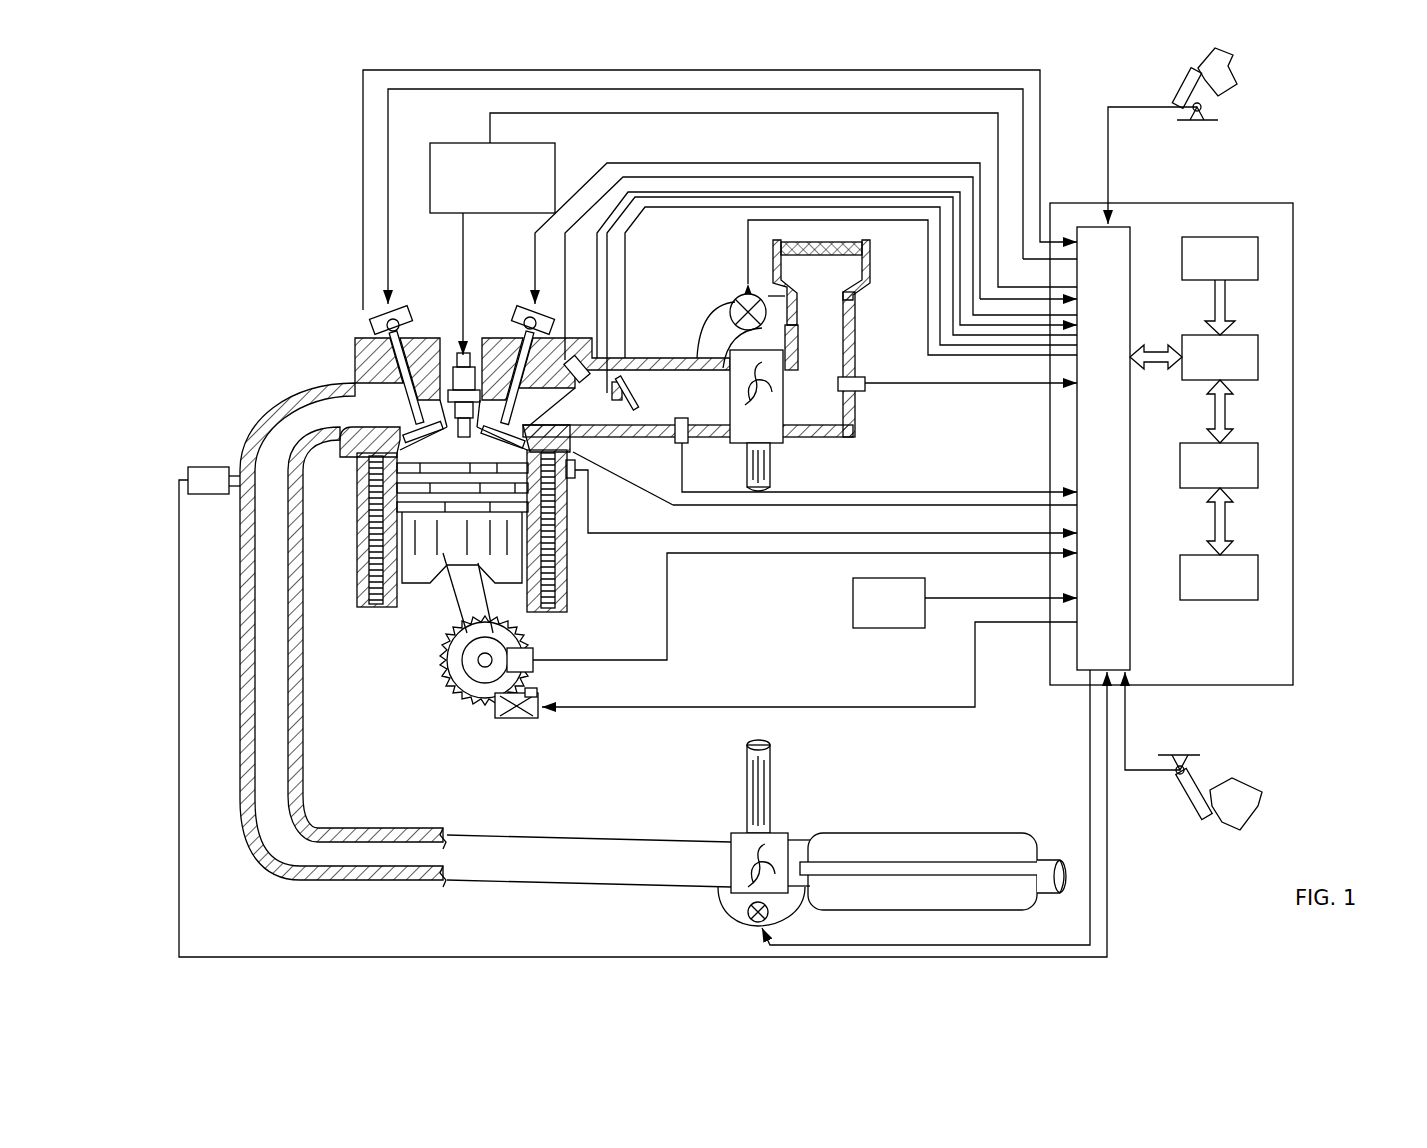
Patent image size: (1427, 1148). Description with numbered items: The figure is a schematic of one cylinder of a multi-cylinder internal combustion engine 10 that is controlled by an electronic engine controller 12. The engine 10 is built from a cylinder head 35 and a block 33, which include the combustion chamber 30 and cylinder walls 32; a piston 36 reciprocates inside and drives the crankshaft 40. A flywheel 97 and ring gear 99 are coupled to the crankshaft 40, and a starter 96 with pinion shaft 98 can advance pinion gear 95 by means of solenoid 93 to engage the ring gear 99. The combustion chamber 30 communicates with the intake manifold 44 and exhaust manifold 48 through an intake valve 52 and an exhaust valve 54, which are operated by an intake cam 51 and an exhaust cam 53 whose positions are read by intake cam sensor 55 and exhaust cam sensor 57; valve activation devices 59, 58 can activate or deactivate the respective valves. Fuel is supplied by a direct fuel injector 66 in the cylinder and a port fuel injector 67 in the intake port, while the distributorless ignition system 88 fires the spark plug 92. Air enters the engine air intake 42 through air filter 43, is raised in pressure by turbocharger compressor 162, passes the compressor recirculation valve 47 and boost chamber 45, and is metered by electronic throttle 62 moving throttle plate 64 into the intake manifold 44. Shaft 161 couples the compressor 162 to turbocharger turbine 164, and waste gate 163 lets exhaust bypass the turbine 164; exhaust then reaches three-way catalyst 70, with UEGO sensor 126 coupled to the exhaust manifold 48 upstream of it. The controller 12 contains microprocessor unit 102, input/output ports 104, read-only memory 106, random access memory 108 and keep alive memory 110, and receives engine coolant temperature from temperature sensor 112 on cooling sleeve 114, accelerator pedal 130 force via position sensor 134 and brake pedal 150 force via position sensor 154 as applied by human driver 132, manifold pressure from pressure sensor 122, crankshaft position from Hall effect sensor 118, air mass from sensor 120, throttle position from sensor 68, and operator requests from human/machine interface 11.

The internal combustion engine 10 is at (288, 290).
The human/machine interface 11 is at (965, 603).
The electronic engine controller 12 is at (1283, 203).
The combustion chamber 30 is at (420, 448).
The cylinder walls 32 is at (400, 587).
The block 33 is at (354, 488).
The cylinder head 35 is at (352, 337).
The piston 36 is at (443, 552).
The crankshaft 40 is at (460, 690).
The engine air intake 42 is at (690, 257).
The air filter 43 is at (843, 256).
The intake manifold 44 is at (600, 413).
The boost chamber 45 is at (705, 413).
The compressor recirculation valve 47 is at (738, 294).
The exhaust manifold 48 is at (338, 417).
The intake cam 51 is at (518, 302).
The intake valve 52 is at (520, 406).
The exhaust cam 53 is at (392, 312).
The exhaust valve 54 is at (362, 383).
The intake cam sensor 55 is at (545, 330).
The exhaust cam sensor 57 is at (376, 312).
The valve activation device 58 is at (400, 325).
The valve activation device 59 is at (525, 326).
The electronic throttle 62 is at (630, 398).
The throttle plate 64 is at (676, 430).
The direct fuel injector 66 is at (575, 470).
The port fuel injector 67 is at (583, 358).
The throttle position sensor 68 is at (622, 378).
The three-way catalyst 70 is at (852, 832).
The distributorless ignition system 88 is at (555, 150).
The spark plug 92 is at (465, 348).
The solenoid 93 is at (537, 692).
The pinion gear 95 is at (525, 719).
The starter 96 is at (535, 717).
The flywheel 97 is at (447, 672).
The pinion shaft 98 is at (510, 719).
The ring gear 99 is at (480, 700).
The microprocessor unit 102 is at (1258, 355).
The input/output ports 104 is at (1133, 237).
The read-only memory 106 is at (1258, 255).
The random access memory 108 is at (1258, 465).
The keep alive memory 110 is at (1258, 575).
The temperature sensor 112 is at (602, 470).
The cooling sleeve 114 is at (570, 547).
The Hall effect sensor 118 is at (535, 648).
The air mass sensor 120 is at (863, 380).
The pressure sensor 122 is at (678, 447).
The Universal Exhaust Gas Oxygen sensor 126 is at (188, 469).
The accelerator pedal 130 is at (1177, 82).
The human driver 132 is at (1235, 68).
The position sensor 134 is at (1213, 108).
The brake pedal 150 is at (1205, 820).
The position sensor 154 is at (1175, 762).
The shaft 161 is at (746, 466).
The turbocharger compressor 162 is at (770, 422).
The waste gate 163 is at (750, 921).
The turbocharger turbine 164 is at (738, 832).